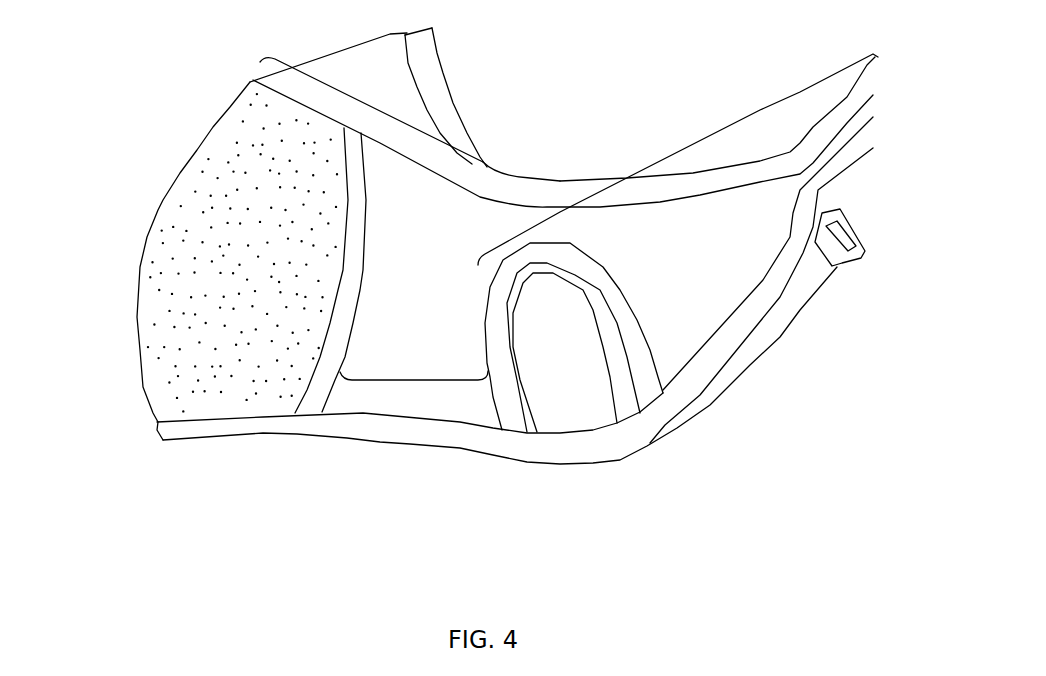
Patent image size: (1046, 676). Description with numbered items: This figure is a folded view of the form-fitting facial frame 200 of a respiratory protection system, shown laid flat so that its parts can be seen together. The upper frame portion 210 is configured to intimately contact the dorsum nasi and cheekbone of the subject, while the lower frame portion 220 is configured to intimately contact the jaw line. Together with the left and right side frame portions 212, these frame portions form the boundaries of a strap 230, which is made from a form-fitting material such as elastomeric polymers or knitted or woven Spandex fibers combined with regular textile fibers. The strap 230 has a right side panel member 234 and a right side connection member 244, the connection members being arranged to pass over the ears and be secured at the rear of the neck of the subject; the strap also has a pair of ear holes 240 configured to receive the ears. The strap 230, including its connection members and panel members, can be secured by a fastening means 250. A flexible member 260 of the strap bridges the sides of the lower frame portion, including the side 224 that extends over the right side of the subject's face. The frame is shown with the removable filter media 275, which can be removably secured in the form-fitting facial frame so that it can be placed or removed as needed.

The form-fitting facial frame 200 is at (169, 80).
The upper frame portion 210 is at (263, 428).
The side frame portion 212 is at (353, 287).
The lower frame portion 220 is at (250, 82).
The side of the lower frame portion 224 is at (508, 148).
The strap 230 is at (432, 305).
The right side panel member 234 is at (413, 381).
The ear hole 240 is at (568, 390).
The right side connection member 244 is at (770, 105).
The fastening means 250 is at (834, 268).
The flexible member 260 is at (431, 67).
The removable filter media 275 is at (180, 272).